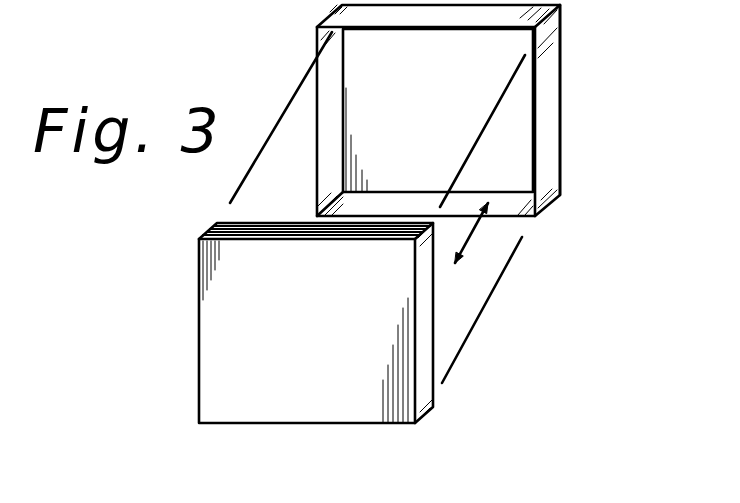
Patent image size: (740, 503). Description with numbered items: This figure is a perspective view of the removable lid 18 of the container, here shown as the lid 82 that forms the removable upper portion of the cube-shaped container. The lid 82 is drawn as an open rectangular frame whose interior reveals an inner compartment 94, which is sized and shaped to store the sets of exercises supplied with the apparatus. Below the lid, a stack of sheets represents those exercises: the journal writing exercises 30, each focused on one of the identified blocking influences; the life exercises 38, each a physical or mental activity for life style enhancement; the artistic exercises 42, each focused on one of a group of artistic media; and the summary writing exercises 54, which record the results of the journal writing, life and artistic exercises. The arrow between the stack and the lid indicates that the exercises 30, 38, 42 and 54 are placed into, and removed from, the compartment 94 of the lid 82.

The removable lid 18 is at (552, 160).
The lid 82 is at (553, 88).
The journal writing exercises 30 is at (245, 224).
The inner compartment 94 is at (397, 360).
The life exercises 38 is at (218, 226).
The artistic exercises 42 is at (212, 225).
The summary writing exercises 54 is at (207, 232).